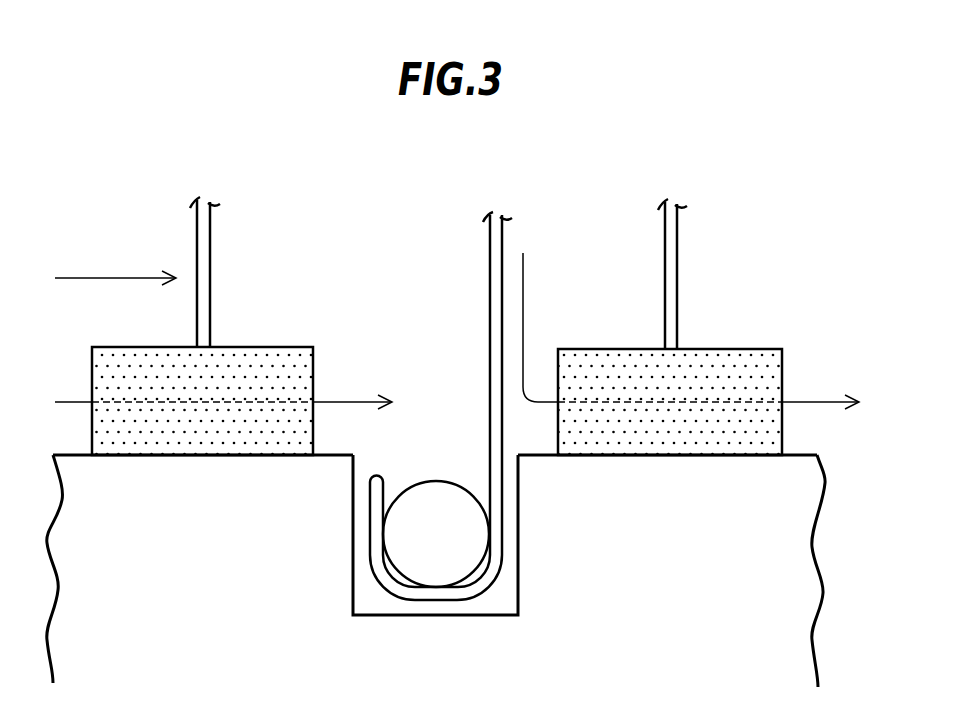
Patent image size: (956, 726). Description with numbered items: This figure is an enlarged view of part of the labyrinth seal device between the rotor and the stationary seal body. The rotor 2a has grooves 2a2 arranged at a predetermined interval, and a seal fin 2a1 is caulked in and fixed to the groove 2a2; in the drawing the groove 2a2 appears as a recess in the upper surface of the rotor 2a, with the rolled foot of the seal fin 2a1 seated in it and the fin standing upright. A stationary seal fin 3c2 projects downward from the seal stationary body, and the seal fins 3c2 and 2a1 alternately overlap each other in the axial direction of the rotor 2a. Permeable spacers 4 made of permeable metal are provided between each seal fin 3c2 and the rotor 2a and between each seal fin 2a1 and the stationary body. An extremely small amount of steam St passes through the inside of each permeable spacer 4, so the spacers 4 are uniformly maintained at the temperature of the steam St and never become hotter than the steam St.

The rotor 2a is at (808, 497).
The seal fin 2a1 is at (490, 248).
The groove 2a2 is at (518, 557).
The seal fin 3c2 is at (680, 235).
The permeable spacer 4 is at (762, 349).
The steam St is at (95, 276).